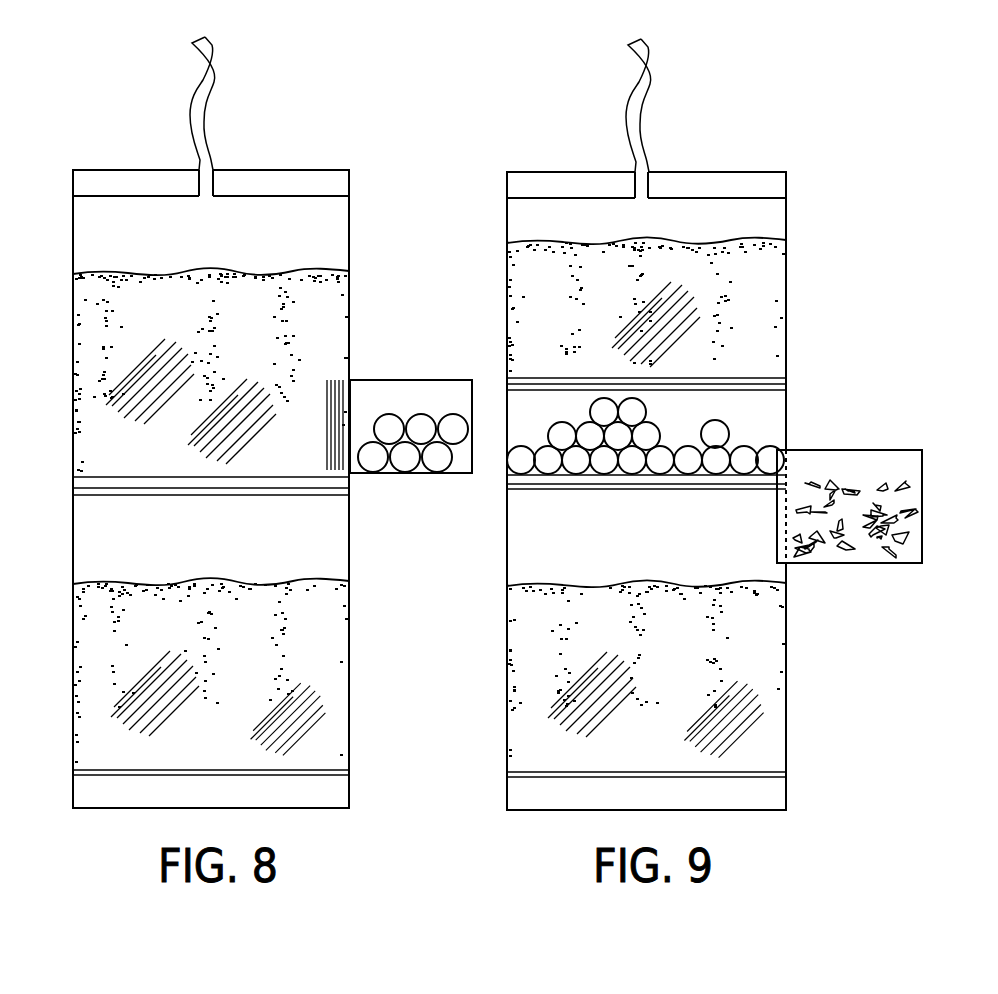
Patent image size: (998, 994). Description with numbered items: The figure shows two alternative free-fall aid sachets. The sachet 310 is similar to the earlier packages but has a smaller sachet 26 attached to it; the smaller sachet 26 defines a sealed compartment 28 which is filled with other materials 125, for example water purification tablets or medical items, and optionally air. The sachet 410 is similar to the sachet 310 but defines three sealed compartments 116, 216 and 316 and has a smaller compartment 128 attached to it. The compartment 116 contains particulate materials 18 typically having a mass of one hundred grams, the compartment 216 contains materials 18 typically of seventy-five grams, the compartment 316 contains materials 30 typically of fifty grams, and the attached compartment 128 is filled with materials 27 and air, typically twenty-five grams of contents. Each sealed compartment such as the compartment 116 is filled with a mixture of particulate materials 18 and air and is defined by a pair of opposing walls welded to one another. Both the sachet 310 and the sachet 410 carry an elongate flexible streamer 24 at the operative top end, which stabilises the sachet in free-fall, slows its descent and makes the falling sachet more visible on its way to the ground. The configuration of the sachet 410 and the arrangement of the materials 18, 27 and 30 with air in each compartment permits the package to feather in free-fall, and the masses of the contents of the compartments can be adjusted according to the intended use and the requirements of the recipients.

In FIG. 8, the sachet 310 is at (52, 245).
In FIG. 9, the sachet 410 is at (476, 245).
In FIG. 8, the elongate flexible streamer 24 is at (203, 107).
In FIG. 9, the elongate flexible streamer 24 is at (640, 108).
In FIG. 8, the smaller sachet 26 is at (413, 380).
In FIG. 8, the sealed compartment 28 is at (458, 465).
In FIG. 8, the other materials 125 is at (438, 464).
In FIG. 9, the sealed compartment 216 is at (782, 268).
In FIG. 9, the particulate materials 18 is at (775, 323).
In FIG. 9, the materials 30 is at (752, 452).
In FIG. 9, the sealed compartment 316 is at (785, 438).
In FIG. 9, the smaller compartment 128 is at (922, 456).
In FIG. 9, the materials 27 is at (910, 545).
In FIG. 9, the sealed compartment 116 is at (786, 575).